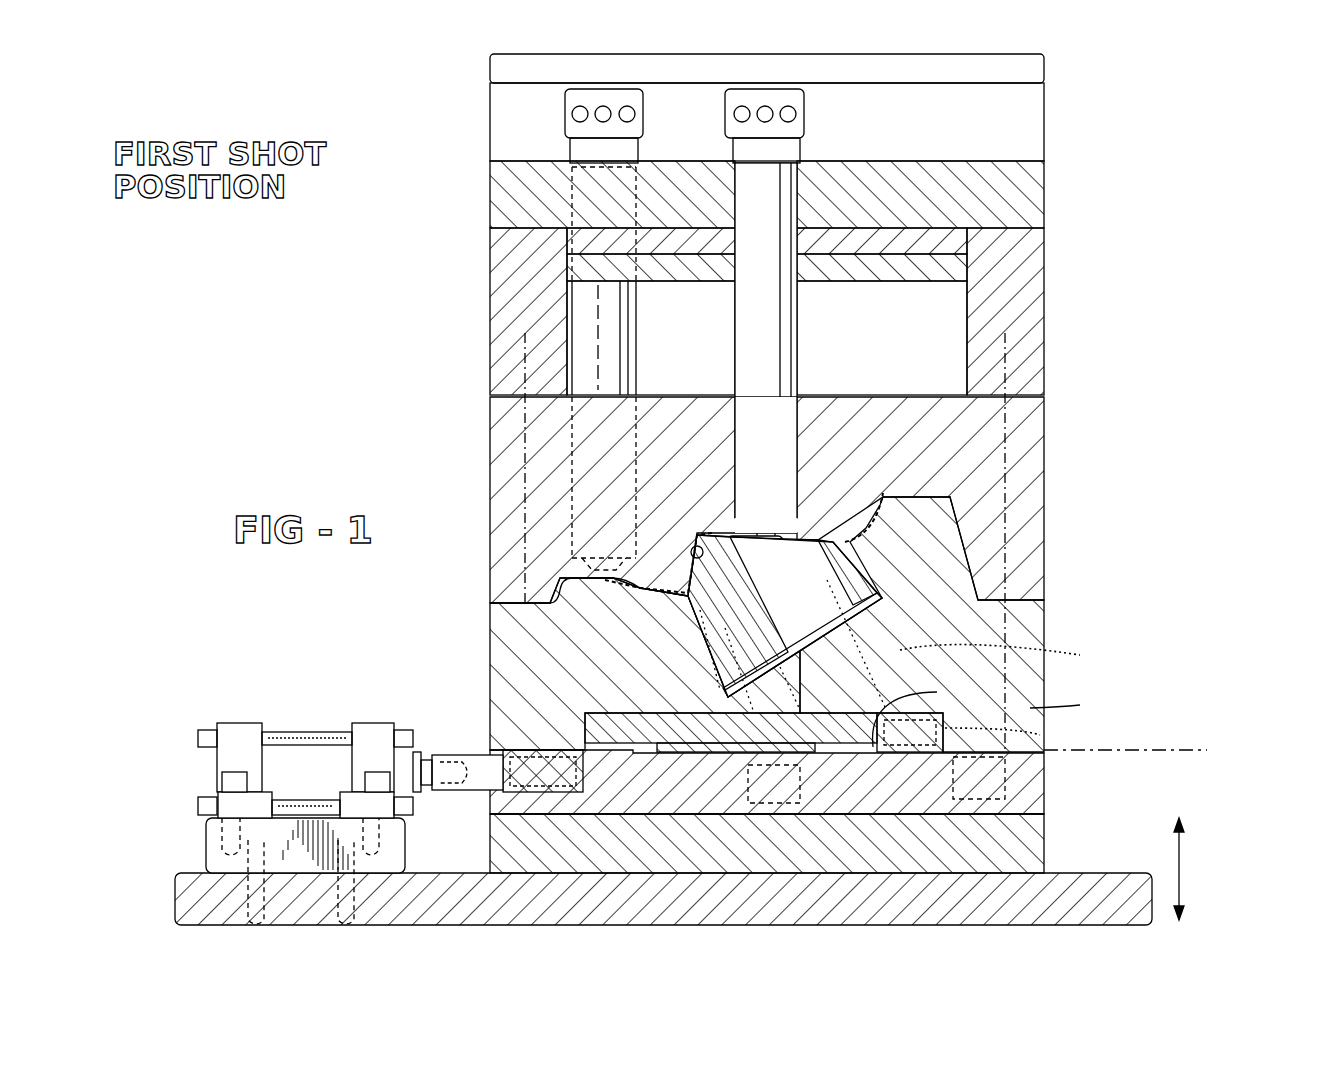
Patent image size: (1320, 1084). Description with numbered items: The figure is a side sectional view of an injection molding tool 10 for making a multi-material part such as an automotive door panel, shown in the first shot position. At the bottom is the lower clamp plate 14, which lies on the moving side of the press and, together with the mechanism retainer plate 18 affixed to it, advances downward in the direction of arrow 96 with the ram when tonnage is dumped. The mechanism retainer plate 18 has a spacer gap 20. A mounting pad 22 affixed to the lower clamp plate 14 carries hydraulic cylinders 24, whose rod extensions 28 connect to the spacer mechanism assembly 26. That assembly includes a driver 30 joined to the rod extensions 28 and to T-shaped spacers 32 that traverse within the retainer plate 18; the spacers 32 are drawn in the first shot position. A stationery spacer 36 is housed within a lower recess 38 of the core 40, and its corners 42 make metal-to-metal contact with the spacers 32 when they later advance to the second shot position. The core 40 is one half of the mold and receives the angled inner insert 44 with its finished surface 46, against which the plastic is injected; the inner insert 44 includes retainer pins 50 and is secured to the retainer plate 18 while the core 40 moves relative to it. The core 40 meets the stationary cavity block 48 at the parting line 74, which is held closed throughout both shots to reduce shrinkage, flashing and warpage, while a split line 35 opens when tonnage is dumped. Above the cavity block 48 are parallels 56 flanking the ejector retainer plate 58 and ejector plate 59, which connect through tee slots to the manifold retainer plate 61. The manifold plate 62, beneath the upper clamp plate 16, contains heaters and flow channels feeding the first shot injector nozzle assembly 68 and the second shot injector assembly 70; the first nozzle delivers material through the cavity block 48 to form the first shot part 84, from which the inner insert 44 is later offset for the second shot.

The injection molding tool 10 is at (440, 75).
The lower clamp plate 14 is at (880, 905).
The upper clamp plate 16 is at (1030, 68).
The mechanism retainer plate 18 is at (1044, 845).
The spacer gap 20 is at (1040, 780).
The mounting pad 22 is at (215, 850).
The hydraulic cylinders 24 is at (242, 740).
The spacer mechanism assembly 26 is at (740, 818).
The rod extensions 28 is at (452, 755).
The driver 30 is at (553, 778).
The spacers 32 is at (628, 787).
The split line 35 is at (1180, 750).
The stationery spacer 36 is at (698, 735).
The lower recess 38 is at (1040, 735).
The core 40 is at (1080, 705).
The corners 42 is at (937, 692).
The inner insert 44 is at (760, 620).
The finished surface 46 is at (693, 545).
The cavity block 48 is at (1035, 430).
The retainer pins 50 is at (1003, 654).
The parallels 56 is at (505, 313).
The ejector retainer plate 58 is at (960, 268).
The ejector plate 59 is at (970, 233).
The manifold retainer plate 61 is at (495, 190).
The manifold plate 62 is at (1030, 118).
The first shot injector nozzle assembly 68 is at (628, 360).
The second shot injector assembly 70 is at (787, 360).
The parting line 74 is at (490, 603).
The first shot part 84 is at (680, 605).
The arrow 96 is at (1181, 892).